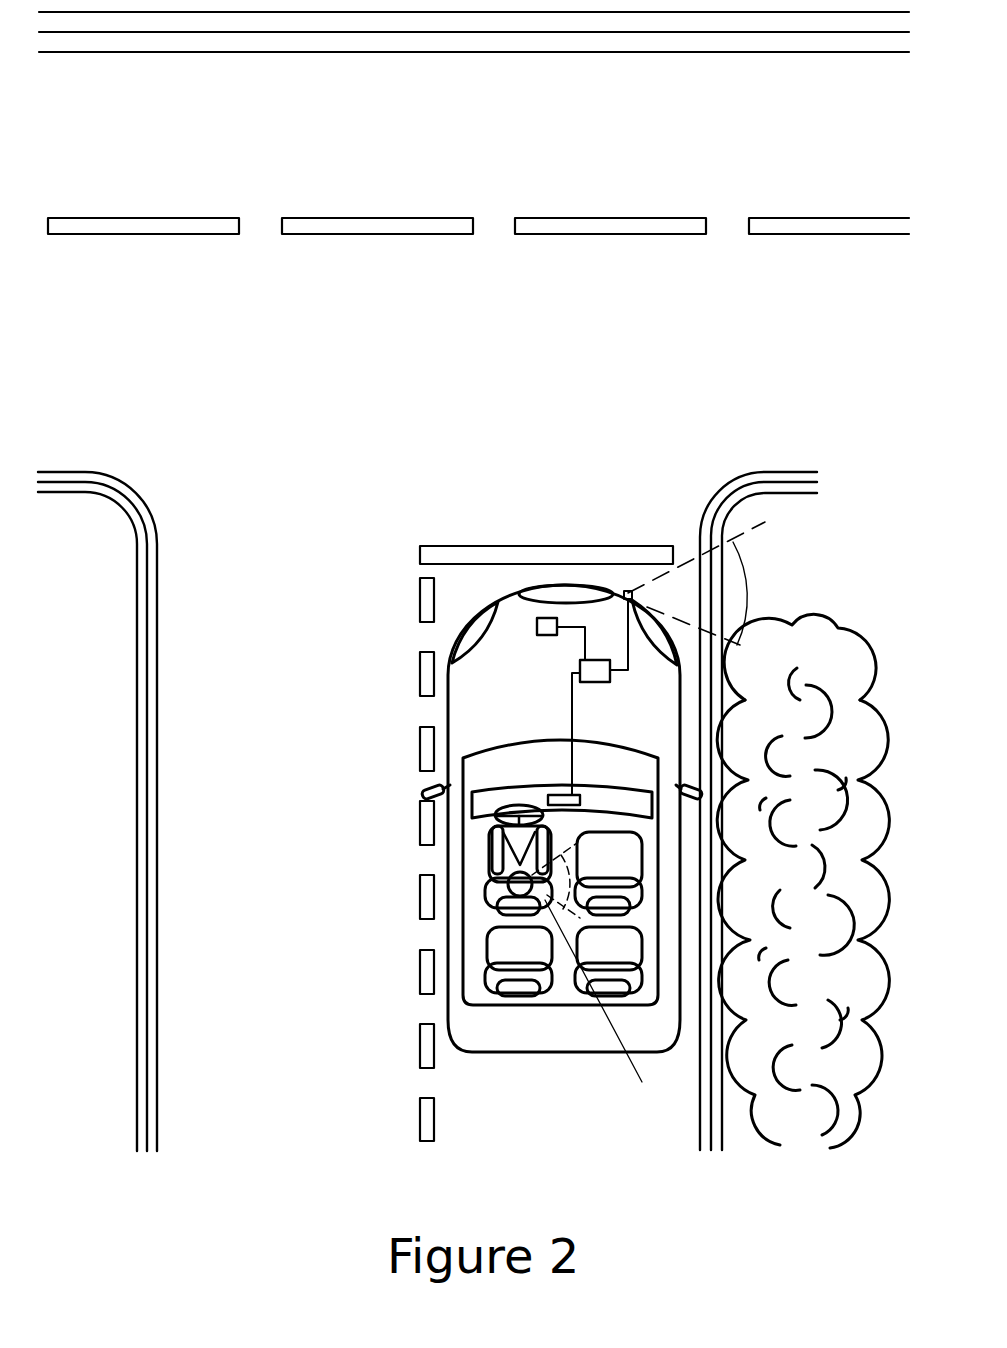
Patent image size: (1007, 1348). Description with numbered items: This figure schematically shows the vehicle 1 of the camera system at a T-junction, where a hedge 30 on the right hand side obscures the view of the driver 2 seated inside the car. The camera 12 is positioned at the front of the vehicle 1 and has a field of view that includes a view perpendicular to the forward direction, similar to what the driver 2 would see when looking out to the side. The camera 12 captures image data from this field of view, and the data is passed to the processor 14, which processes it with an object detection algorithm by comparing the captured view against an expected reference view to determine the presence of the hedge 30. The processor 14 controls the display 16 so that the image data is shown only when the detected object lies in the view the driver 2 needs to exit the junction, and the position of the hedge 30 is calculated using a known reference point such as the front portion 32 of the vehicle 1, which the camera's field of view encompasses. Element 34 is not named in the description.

The vehicle 1 is at (517, 1082).
The driver 2 is at (498, 885).
The camera 12 is at (626, 594).
The processor 14 is at (602, 667).
The display 16 is at (555, 798).
The hedge 30 is at (810, 645).
The front portion 32 is at (647, 607).
The driver monitoring sensor 34 is at (547, 625).